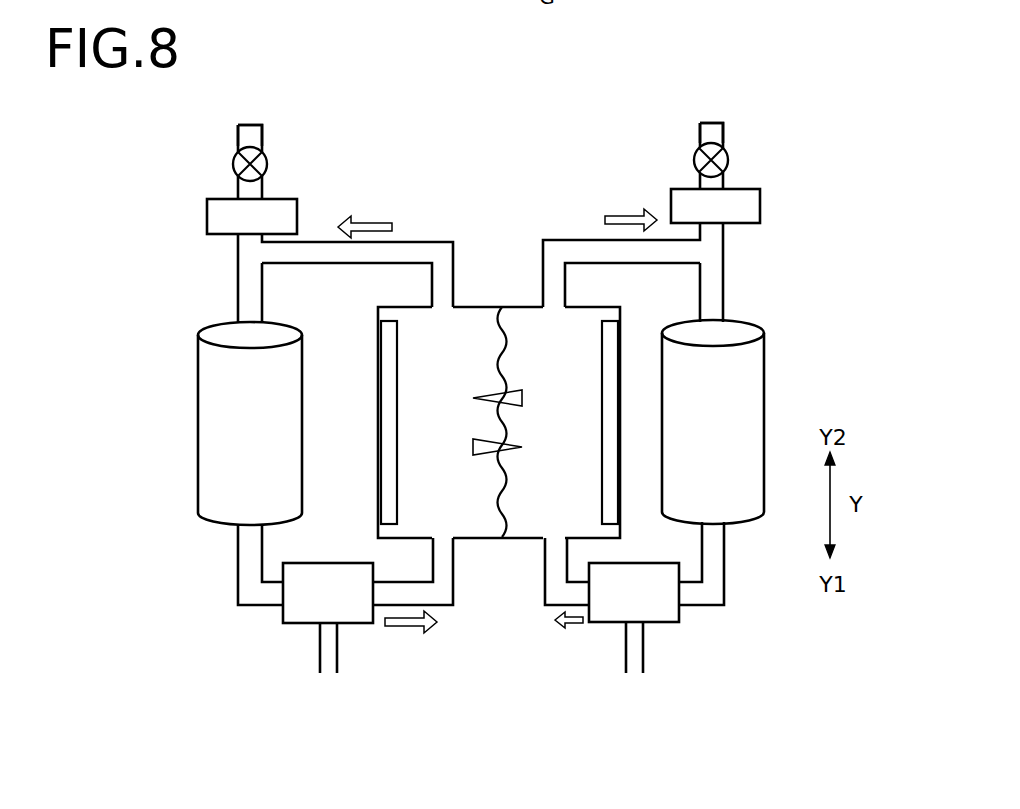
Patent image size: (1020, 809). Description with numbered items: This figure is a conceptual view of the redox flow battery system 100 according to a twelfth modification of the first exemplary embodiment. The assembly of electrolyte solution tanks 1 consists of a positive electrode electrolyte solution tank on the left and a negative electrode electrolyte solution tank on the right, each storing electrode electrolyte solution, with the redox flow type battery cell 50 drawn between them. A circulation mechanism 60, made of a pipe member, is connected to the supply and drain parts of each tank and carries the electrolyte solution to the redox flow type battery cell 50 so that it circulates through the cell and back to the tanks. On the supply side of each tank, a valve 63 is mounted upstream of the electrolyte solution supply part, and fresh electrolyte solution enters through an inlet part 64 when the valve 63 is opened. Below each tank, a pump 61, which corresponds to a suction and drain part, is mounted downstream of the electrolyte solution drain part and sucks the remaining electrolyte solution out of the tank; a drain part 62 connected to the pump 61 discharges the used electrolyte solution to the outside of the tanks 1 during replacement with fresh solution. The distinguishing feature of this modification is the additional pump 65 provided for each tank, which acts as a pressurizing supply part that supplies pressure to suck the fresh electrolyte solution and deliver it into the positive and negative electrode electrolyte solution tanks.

The redox flow battery system 100 is at (585, 123).
The electrolyte solution tank 1 is at (199, 422).
The redox flow type battery cell 50 is at (487, 307).
The circulation mechanism 60 is at (247, 306).
The pump 61 is at (306, 611).
The drain part 62 is at (330, 668).
The valve 63 is at (240, 163).
The inlet part 64 is at (248, 131).
The pump 65 is at (212, 215).